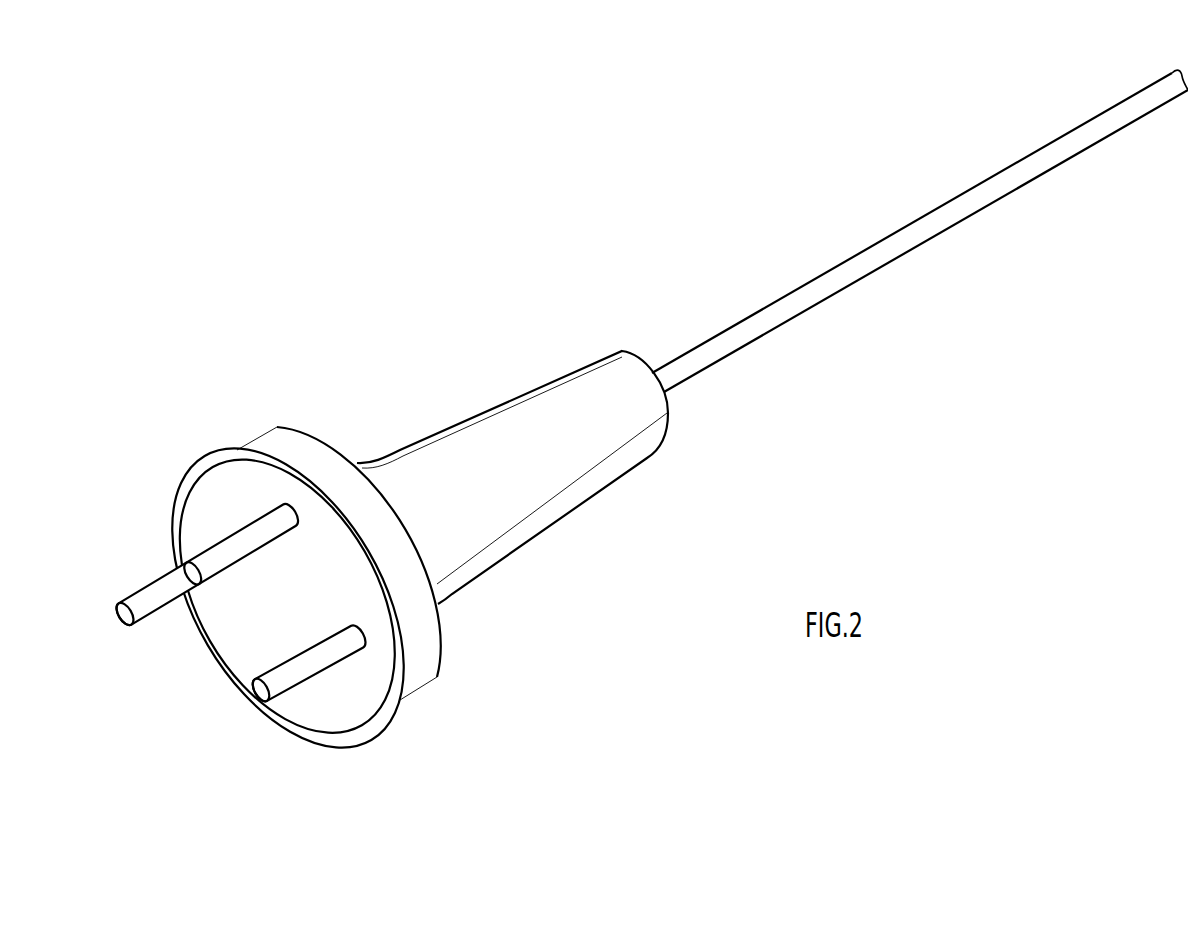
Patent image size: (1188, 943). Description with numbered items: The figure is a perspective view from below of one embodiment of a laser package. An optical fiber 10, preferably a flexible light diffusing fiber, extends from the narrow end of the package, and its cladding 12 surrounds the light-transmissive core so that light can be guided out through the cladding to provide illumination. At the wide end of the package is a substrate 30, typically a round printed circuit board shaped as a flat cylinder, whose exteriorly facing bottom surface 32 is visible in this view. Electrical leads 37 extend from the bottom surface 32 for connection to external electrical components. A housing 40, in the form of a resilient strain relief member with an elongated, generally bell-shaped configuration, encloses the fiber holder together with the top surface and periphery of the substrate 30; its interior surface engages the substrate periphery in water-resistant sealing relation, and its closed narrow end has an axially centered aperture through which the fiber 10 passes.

The optical fiber 10 is at (650, 424).
The cladding 12 is at (763, 338).
The substrate 30 is at (282, 613).
The bottom surface 32 is at (292, 613).
The electrical leads 37 is at (228, 552).
The housing 40 is at (593, 498).